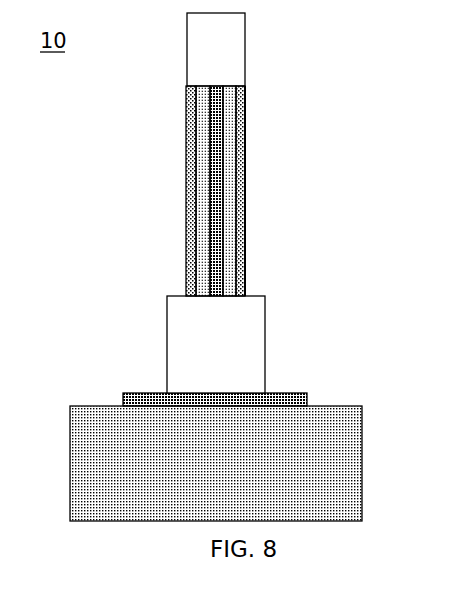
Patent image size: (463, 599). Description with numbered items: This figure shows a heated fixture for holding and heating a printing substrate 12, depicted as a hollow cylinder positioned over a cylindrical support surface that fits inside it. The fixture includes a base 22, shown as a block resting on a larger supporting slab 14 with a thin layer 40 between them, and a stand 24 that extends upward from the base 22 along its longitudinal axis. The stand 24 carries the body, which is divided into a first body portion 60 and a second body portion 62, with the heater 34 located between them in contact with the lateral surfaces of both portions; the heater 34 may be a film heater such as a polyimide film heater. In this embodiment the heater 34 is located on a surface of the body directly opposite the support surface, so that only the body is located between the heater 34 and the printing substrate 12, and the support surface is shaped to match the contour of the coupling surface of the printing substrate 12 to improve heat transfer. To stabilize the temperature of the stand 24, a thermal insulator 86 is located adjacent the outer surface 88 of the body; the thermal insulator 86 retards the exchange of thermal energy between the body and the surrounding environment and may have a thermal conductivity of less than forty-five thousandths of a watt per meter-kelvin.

The printing substrate 12 is at (209, 43).
The base 14 is at (310, 495).
The base 22 is at (247, 345).
The stand 24 is at (236, 125).
The heater 34 is at (225, 187).
The bonding layer 40 is at (307, 398).
The first body portion 60 is at (242, 242).
The second body portion 62 is at (200, 213).
The thermal insulator 86 is at (186, 147).
The outer surface 88 is at (186, 271).